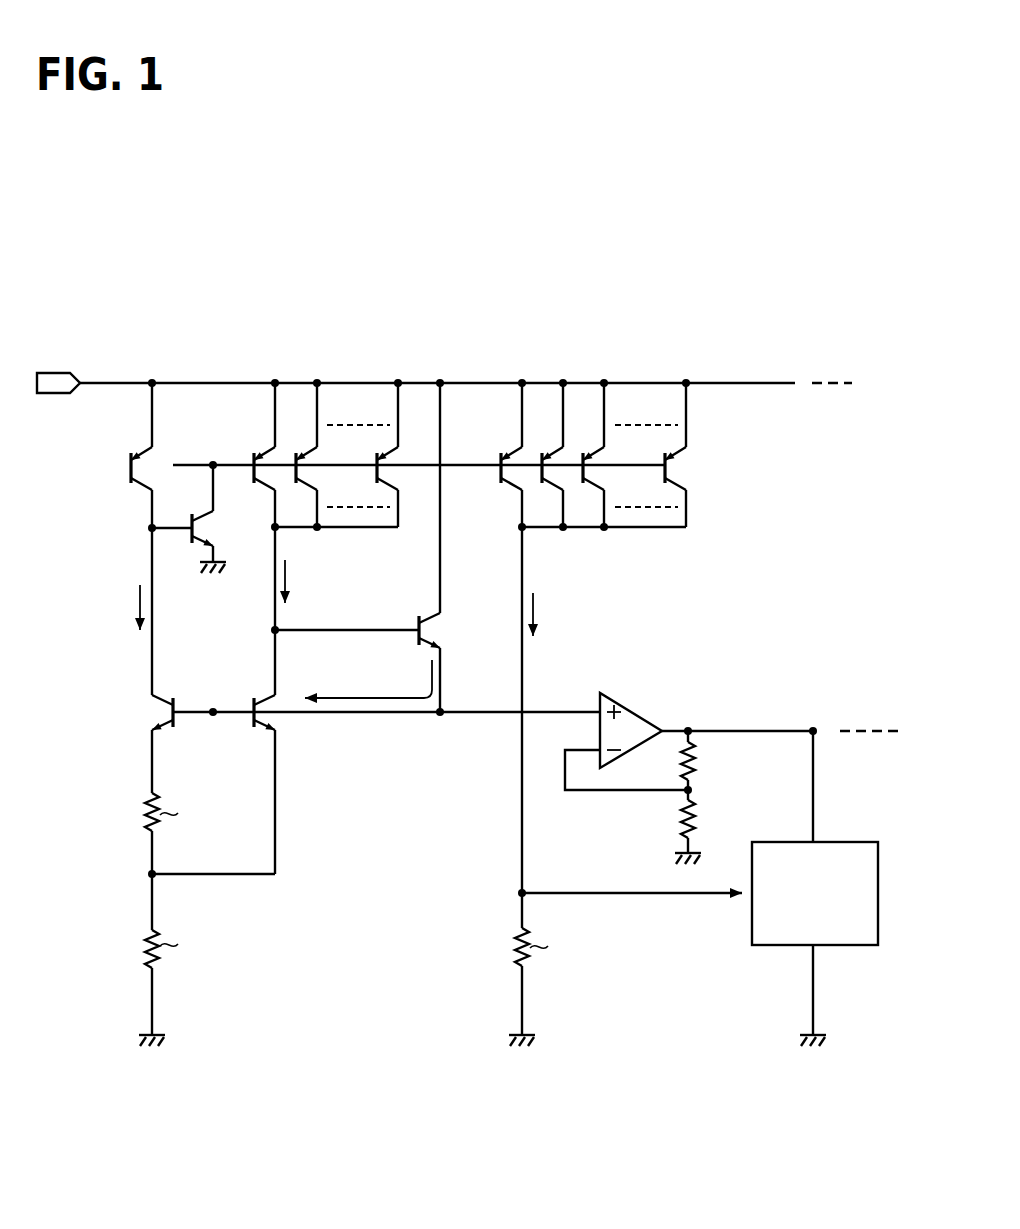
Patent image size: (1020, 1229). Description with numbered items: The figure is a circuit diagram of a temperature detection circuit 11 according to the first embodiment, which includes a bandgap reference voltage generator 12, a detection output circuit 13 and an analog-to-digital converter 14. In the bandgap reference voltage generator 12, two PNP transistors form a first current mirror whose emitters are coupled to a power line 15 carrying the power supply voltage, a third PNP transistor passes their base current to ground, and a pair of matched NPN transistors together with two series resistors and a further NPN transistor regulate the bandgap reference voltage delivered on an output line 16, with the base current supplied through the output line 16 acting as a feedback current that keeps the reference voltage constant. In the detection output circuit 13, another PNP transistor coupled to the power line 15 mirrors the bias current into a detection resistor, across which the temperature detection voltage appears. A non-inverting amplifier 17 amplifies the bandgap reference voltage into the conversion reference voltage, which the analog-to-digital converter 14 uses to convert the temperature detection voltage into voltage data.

The temperature detection circuit 11 is at (463, 296).
The bandgap reference voltage generator 12 is at (158, 344).
The detection output circuit 13 is at (535, 344).
The analog-to-digital converter 14 is at (848, 947).
The power line 15 is at (208, 383).
The output line 16 is at (385, 714).
The non-inverting amplifier 17 is at (638, 701).